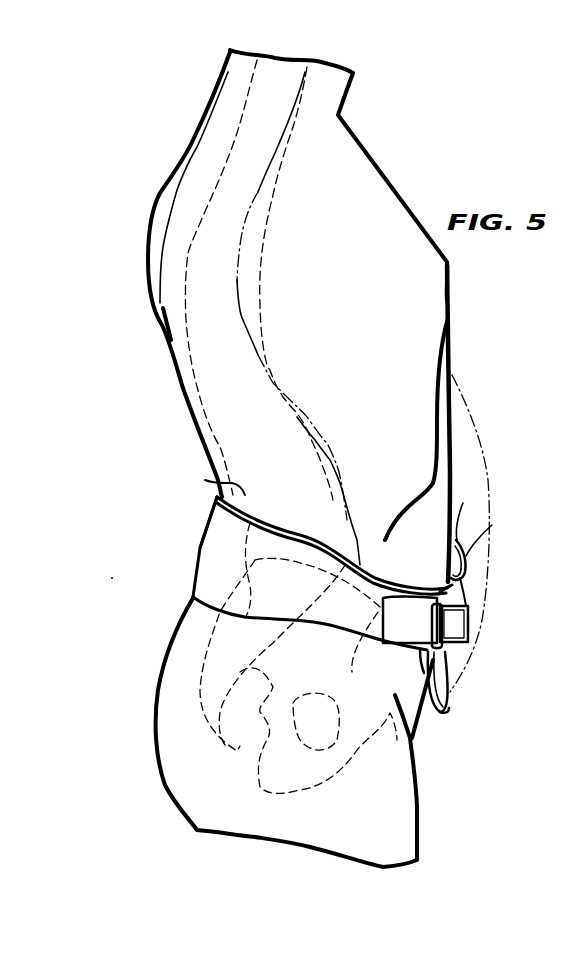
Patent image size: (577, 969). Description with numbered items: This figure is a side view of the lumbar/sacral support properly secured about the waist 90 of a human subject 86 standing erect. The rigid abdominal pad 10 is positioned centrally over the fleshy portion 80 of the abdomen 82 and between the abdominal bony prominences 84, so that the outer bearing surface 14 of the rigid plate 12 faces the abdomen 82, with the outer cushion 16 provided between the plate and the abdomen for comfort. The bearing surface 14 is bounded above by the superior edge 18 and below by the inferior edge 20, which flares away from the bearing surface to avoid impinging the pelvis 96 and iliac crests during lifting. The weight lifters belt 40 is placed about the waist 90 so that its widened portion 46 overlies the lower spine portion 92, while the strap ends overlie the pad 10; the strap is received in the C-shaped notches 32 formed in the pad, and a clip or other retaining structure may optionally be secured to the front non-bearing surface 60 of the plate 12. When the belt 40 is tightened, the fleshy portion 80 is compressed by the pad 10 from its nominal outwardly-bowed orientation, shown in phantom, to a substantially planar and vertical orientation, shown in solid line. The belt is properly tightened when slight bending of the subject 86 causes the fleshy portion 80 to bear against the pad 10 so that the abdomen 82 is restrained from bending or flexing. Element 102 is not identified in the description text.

The rigid abdominal pad 10 is at (482, 557).
The rigid plate 12 is at (455, 680).
The outer bearing surface 14 is at (467, 533).
The outer cushion 16 is at (424, 673).
The superior edge 18 is at (492, 533).
The inferior edge 20 is at (438, 713).
The C-shaped notches 32 is at (468, 576).
The weight lifters belt 40 is at (188, 577).
The widened portion 46 is at (193, 557).
The non-bearing surface 60 is at (451, 687).
The fleshy portion 80 is at (442, 570).
The abdomen 82 is at (438, 545).
The abdominal bony prominences 84 is at (427, 480).
The human subject 86 is at (453, 260).
The waist 90 is at (211, 477).
The lower spine portion 92 is at (337, 468).
The pelvis 96 is at (316, 721).
The pocket 102 is at (312, 660).